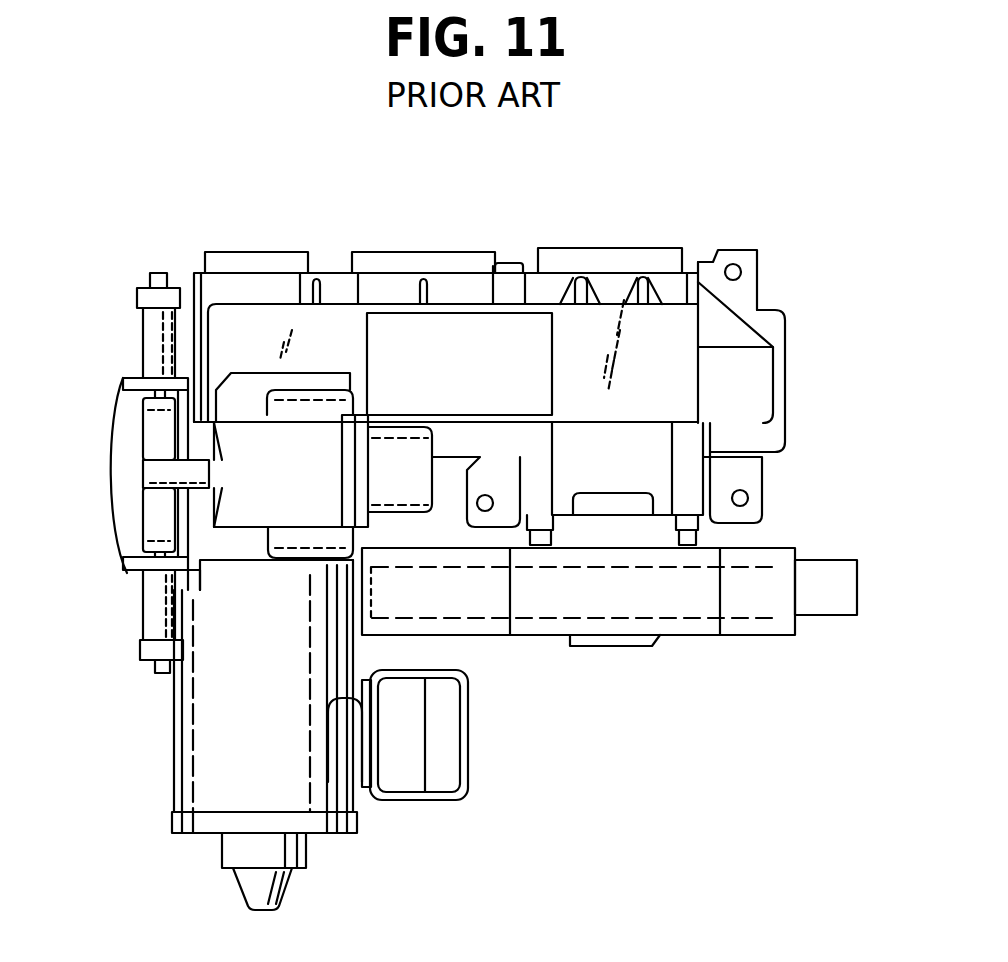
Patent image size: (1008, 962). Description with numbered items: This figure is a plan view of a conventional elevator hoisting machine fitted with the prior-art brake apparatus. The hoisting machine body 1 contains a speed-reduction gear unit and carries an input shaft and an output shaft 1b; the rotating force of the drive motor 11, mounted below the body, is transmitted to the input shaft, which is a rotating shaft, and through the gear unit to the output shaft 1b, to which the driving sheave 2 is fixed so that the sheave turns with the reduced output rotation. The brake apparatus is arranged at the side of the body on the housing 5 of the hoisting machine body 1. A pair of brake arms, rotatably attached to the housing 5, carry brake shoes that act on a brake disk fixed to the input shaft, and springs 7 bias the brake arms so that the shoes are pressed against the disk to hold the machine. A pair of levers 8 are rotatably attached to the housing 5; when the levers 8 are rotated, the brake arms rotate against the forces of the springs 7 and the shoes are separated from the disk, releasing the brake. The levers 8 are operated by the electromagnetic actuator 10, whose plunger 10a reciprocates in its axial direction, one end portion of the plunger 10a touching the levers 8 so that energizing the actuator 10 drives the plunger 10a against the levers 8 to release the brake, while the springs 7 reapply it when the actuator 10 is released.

The hoisting machine body 1 is at (796, 343).
The output shaft 1b is at (617, 648).
The driving sheave 2 is at (857, 588).
The housing 5 is at (132, 578).
The springs 7 is at (153, 613).
The levers 8 is at (130, 543).
The electromagnetic actuator 10 is at (289, 440).
The plunger 10a is at (142, 474).
The drive motor 11 is at (213, 760).